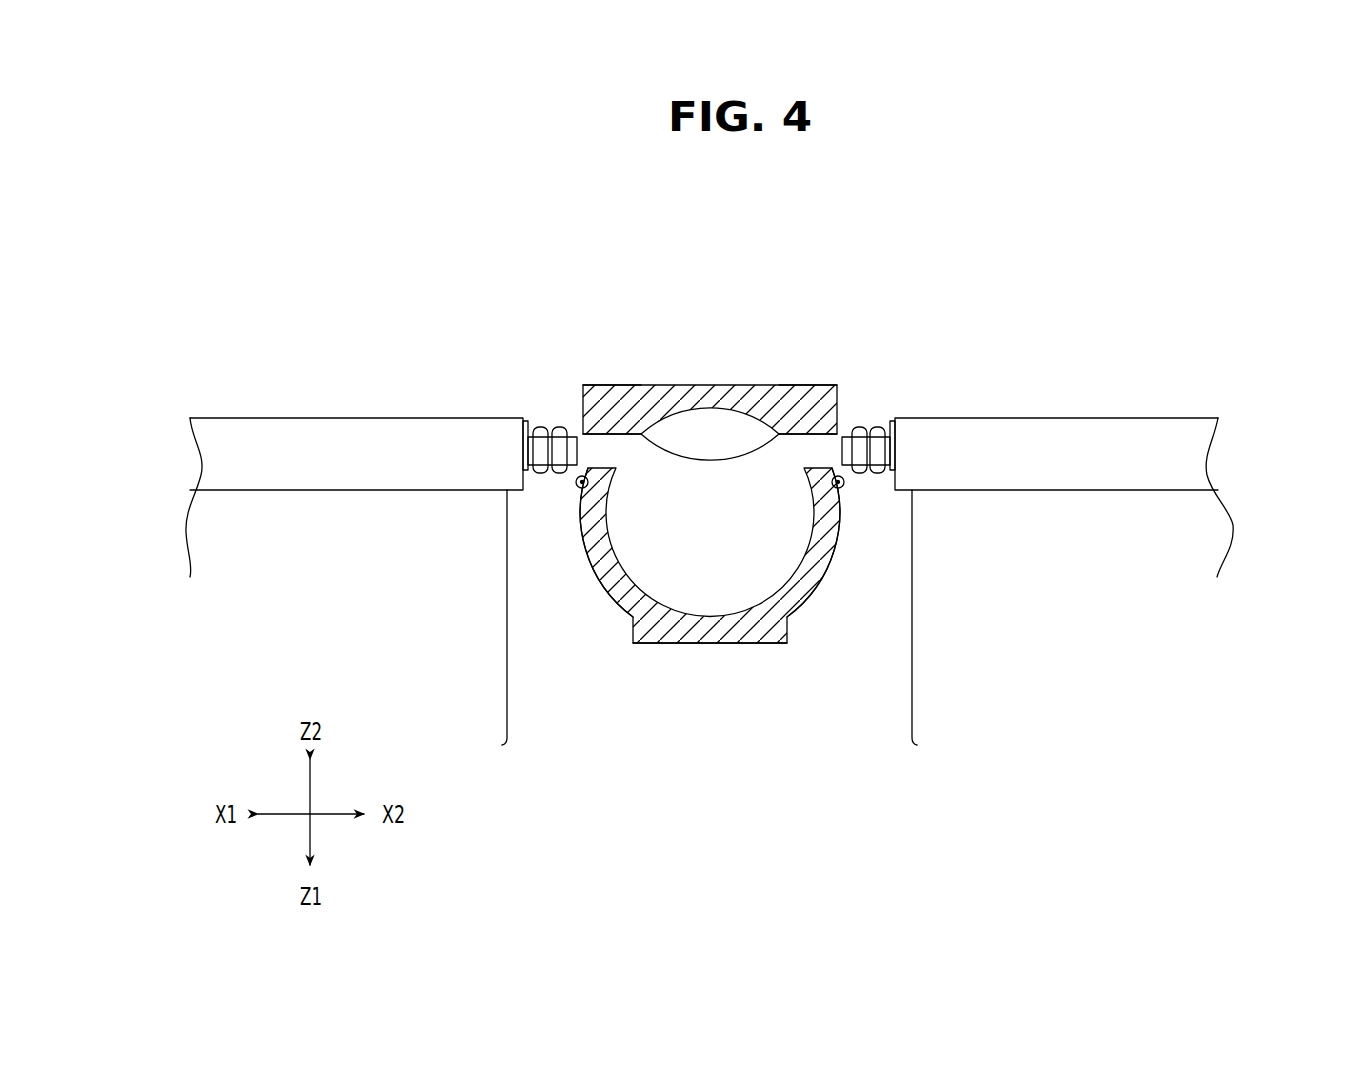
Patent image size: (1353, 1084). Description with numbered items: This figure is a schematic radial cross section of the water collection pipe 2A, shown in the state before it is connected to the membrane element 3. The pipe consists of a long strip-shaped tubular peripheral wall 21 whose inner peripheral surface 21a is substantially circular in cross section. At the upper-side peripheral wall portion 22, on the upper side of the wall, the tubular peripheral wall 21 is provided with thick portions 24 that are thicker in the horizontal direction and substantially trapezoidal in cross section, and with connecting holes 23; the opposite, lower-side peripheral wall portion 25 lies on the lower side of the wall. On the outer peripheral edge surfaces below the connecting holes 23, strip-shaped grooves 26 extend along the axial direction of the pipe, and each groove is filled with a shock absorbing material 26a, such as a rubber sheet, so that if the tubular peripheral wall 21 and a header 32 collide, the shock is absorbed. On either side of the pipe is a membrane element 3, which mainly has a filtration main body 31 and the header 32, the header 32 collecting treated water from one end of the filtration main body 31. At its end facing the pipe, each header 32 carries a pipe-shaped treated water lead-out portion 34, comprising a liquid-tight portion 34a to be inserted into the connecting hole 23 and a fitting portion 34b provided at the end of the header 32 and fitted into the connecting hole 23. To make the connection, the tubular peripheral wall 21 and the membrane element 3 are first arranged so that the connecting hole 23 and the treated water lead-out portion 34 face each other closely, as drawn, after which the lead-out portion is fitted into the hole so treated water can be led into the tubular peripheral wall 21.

The water collection pipe 2A is at (650, 332).
The tubular peripheral wall 21 is at (693, 385).
The inner peripheral surface 21a is at (668, 592).
The upper-side peripheral wall portion 22 is at (723, 365).
The connecting hole 23 is at (613, 450).
The thick portion 24 is at (600, 385).
The lower-side peripheral wall portion 25 is at (718, 648).
The strip-shaped groove 26 is at (593, 493).
The shock absorbing material 26a is at (580, 489).
The membrane element 3 is at (702, 510).
The filtration main body 31 is at (205, 523).
The header 32 is at (240, 442).
The treated water lead-out portion 34 is at (709, 406).
The liquid-tight portion 34a is at (577, 421).
The fitting portion 34b is at (577, 383).